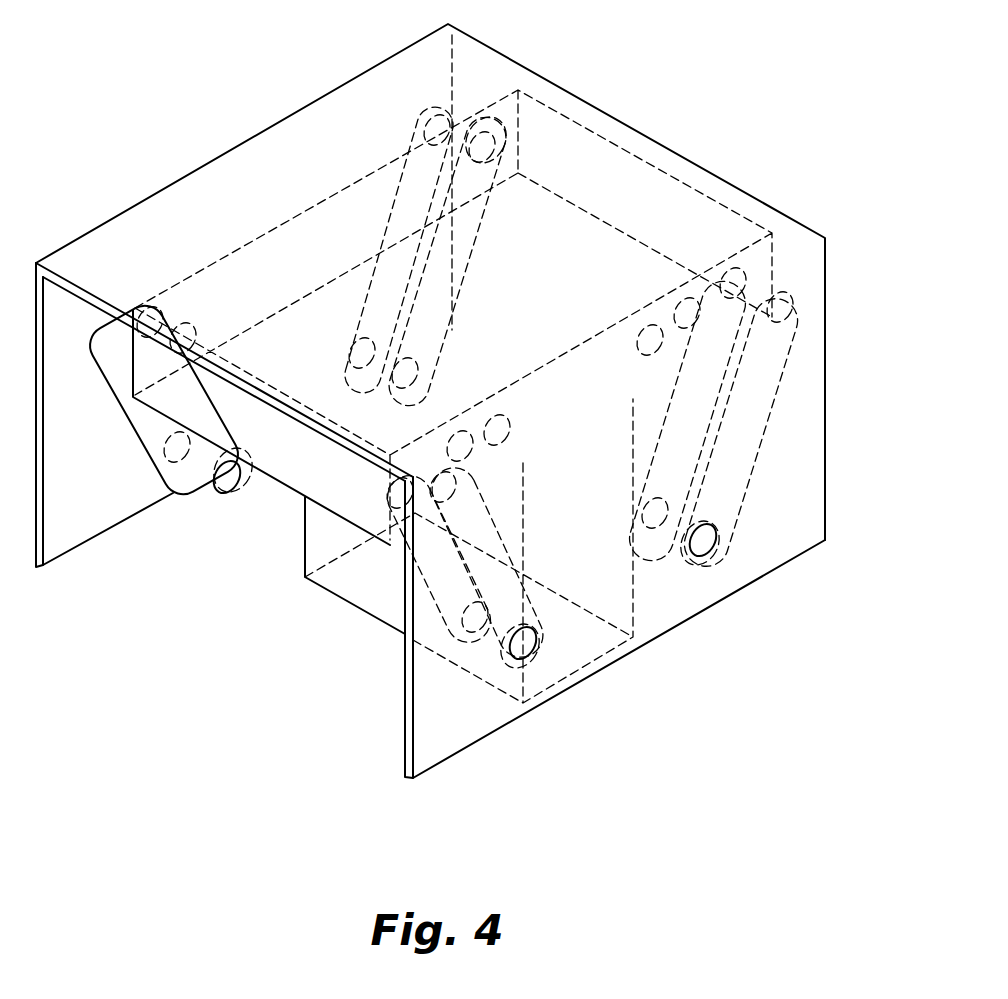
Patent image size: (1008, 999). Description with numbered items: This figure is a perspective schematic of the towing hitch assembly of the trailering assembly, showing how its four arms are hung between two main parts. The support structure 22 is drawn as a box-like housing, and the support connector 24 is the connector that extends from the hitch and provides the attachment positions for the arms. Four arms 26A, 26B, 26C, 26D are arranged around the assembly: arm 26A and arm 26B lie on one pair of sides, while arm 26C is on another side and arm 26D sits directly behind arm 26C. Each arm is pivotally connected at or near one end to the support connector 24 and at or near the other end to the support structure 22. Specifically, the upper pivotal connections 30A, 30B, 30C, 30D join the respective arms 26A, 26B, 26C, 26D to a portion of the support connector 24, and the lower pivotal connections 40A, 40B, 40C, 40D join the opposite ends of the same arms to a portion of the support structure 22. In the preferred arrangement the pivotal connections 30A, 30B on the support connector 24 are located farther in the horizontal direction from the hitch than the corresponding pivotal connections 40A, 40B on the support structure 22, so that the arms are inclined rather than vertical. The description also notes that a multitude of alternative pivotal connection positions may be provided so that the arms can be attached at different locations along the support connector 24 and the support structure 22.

The support structure 22 is at (827, 378).
The support connector 24 is at (587, 555).
The arm 26A is at (460, 568).
The arm 26B is at (737, 437).
The arm 26C is at (150, 430).
The arm 26D is at (437, 273).
The pivotal connection 30A is at (440, 500).
The pivotal connection 30B is at (793, 300).
The pivotal connection 30C is at (182, 332).
The pivotal connection 30D is at (487, 150).
The pivotal connection 40A is at (524, 647).
The pivotal connection 40B is at (708, 543).
The pivotal connection 40C is at (227, 477).
The pivotal connection 40D is at (365, 352).